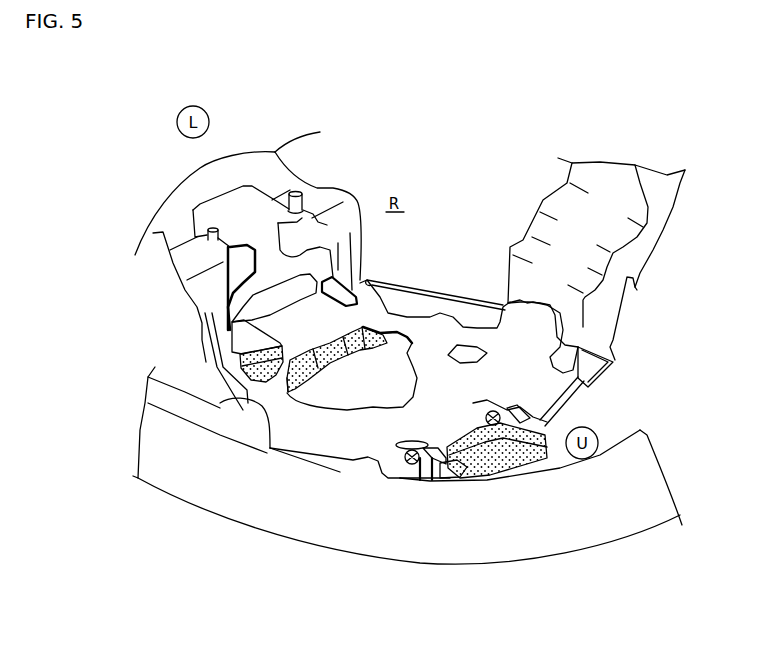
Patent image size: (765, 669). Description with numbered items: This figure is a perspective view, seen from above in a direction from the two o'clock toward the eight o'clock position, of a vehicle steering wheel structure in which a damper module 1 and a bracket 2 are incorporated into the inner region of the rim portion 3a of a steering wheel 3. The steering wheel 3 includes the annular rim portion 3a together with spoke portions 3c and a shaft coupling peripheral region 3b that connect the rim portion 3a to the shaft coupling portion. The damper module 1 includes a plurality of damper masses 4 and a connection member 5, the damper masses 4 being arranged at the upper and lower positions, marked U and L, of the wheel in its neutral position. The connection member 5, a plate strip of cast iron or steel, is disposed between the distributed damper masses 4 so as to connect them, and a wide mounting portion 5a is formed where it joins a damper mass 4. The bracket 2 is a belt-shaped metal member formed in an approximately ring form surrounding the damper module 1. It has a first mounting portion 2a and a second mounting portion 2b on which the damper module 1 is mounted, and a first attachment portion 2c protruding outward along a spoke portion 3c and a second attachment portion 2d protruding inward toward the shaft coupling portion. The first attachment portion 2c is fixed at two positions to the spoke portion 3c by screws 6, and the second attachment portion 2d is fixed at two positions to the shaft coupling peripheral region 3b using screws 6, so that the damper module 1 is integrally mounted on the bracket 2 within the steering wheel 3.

The damper module 1 is at (371, 380).
The bracket 2 is at (477, 294).
The first mounting portion 2a is at (255, 332).
The second mounting portion 2b is at (433, 450).
The first attachment portion 2c is at (253, 230).
The second attachment portion 2d is at (480, 402).
The steering wheel 3 is at (296, 565).
The rim portion 3a is at (592, 528).
The shaft coupling peripheral region 3b is at (545, 377).
The spoke portion 3c is at (185, 265).
The damper mass 4 is at (247, 357).
The connection member 5 is at (407, 330).
The mounting portion 5a is at (338, 362).
The screw 6 is at (305, 200).